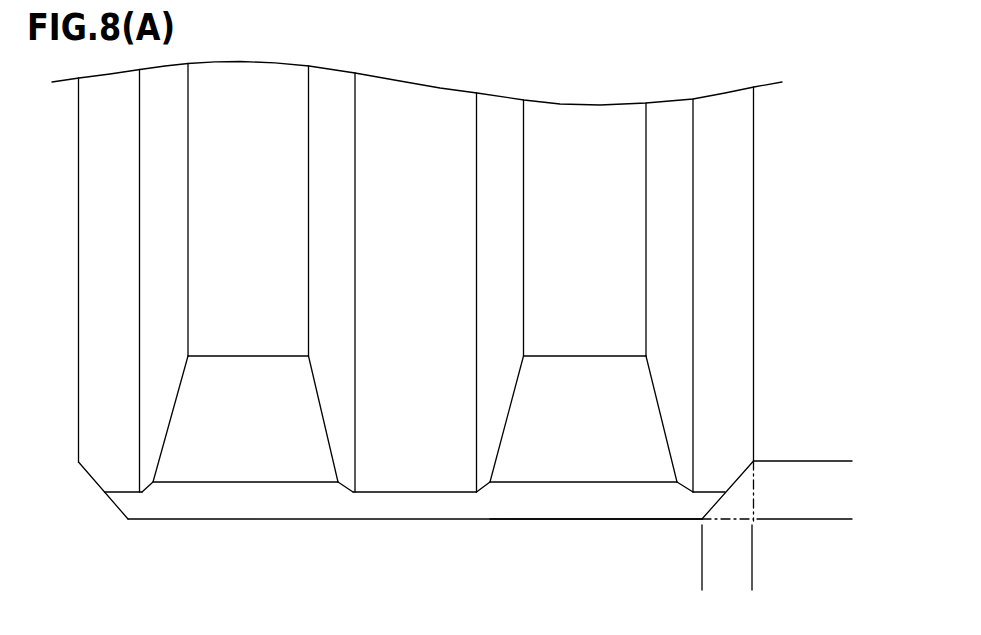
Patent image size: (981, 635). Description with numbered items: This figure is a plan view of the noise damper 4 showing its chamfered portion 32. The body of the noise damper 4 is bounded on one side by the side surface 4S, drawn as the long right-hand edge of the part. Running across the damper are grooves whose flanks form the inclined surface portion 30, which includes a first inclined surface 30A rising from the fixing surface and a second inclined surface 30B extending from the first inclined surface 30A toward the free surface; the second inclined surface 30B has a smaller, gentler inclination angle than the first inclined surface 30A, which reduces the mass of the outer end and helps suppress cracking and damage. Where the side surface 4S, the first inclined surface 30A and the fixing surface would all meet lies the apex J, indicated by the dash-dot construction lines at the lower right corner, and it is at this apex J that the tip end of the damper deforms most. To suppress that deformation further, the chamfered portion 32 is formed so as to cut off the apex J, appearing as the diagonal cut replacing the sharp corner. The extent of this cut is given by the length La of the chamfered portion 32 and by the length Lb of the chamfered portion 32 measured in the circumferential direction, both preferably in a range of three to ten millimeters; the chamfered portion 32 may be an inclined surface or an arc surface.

The noise damper 4 is at (767, 198).
The side surface 4S is at (754, 262).
The chamfered portion 32 is at (735, 487).
The inclined surface portion 30 is at (637, 585).
The first inclined surface 30A is at (603, 503).
The second inclined surface 30B is at (530, 465).
The length La of the chamfered portion La is at (752, 585).
The length Lb of the chamfered portion in the circumferential direction Lb is at (847, 428).
The apex J is at (757, 523).